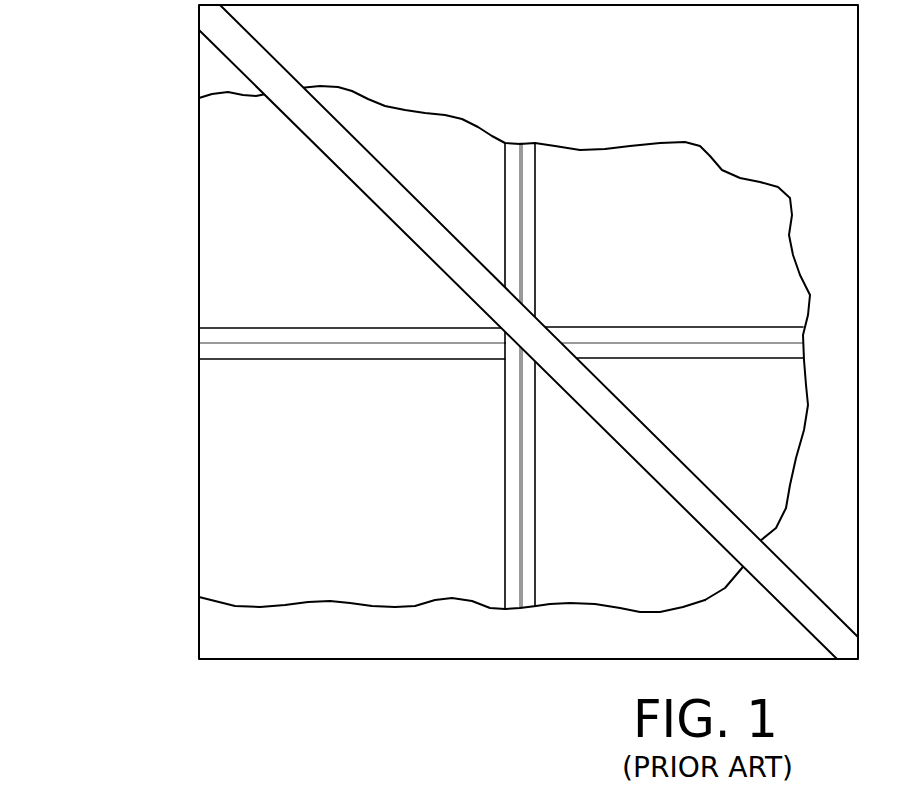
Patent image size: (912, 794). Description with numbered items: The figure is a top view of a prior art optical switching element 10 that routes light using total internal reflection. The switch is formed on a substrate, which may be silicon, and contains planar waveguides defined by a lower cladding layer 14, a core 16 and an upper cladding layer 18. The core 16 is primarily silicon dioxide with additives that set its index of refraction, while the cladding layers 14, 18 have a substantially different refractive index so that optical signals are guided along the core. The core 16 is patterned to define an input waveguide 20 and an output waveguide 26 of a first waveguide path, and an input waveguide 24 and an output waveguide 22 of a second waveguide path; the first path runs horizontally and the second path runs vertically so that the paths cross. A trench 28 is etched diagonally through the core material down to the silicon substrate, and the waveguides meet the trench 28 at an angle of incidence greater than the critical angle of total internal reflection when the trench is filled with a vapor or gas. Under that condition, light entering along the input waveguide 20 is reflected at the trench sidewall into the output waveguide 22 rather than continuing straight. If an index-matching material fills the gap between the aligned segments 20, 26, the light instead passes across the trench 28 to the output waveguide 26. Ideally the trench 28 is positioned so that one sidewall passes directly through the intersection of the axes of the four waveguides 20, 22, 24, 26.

The switching element 10 is at (114, 30).
The lower cladding layer 14 is at (210, 512).
The core 16 is at (222, 372).
The upper cladding layer 18 is at (210, 625).
The input waveguide 20 is at (270, 337).
The output waveguide 22 is at (508, 432).
The input waveguide 24 is at (532, 211).
The output waveguide 26 is at (727, 333).
The trench 28 is at (253, 51).